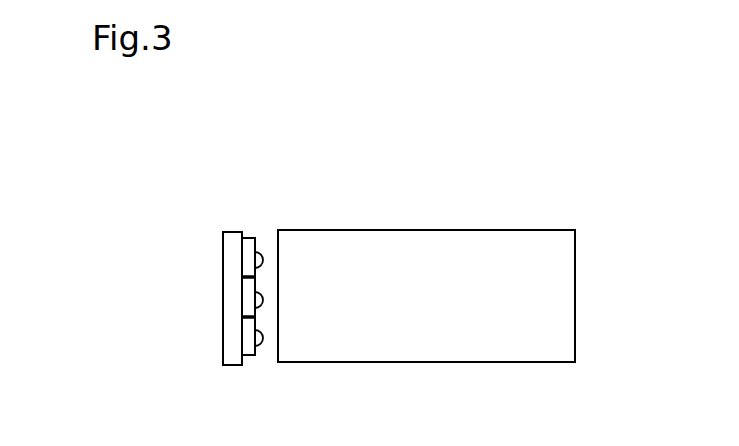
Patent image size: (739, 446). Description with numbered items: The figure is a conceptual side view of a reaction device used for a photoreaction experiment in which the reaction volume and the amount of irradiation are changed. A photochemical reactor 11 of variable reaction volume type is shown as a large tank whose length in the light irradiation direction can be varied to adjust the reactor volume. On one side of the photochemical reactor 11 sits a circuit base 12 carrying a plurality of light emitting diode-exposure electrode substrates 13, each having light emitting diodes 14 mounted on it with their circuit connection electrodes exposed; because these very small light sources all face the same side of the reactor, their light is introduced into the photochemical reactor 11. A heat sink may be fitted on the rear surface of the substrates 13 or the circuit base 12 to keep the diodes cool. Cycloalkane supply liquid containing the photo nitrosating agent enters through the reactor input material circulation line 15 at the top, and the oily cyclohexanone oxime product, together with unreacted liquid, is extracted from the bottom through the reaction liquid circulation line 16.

The photochemical reactor 11 is at (522, 230).
The circuit base 12 is at (228, 231).
The light emitting diode-exposure electrode substrate 13 is at (247, 237).
The light emitting diode 14 is at (260, 252).
The reactor input material circulation line 15 is at (304, 230).
The reaction liquid circulation line 16 is at (553, 362).